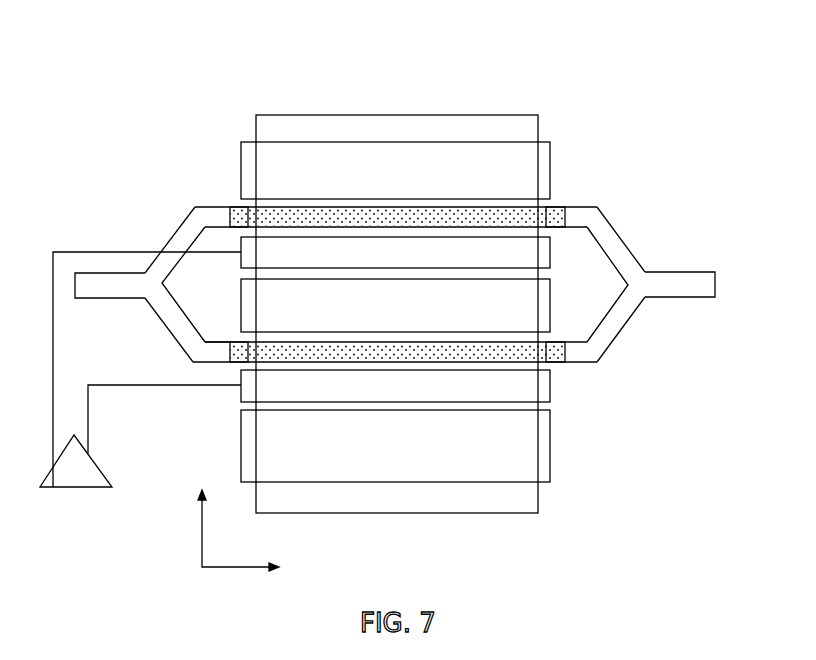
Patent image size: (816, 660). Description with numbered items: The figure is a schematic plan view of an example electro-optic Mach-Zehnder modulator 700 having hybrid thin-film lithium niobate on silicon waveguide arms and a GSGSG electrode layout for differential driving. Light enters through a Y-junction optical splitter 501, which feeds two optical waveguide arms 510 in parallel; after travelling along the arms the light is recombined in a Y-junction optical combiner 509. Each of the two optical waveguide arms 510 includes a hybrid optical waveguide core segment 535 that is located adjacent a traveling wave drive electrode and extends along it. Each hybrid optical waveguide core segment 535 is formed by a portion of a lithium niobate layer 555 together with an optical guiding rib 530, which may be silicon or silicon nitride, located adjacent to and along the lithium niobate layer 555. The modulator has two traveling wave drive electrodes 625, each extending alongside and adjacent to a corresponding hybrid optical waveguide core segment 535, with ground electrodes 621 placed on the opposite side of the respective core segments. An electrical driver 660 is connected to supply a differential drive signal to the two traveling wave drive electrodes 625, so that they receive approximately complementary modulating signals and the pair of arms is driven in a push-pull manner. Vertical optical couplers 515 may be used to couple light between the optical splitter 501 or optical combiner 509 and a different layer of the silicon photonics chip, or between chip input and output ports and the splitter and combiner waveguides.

The electro-optic MZM 700 is at (424, 33).
The lithium niobate layer 555 is at (337, 115).
The ground electrodes 621 is at (553, 155).
The optical splitter 501 is at (146, 266).
The optical waveguide arms 510 is at (228, 200).
The optical guiding rib 530 is at (525, 212).
The hybrid optical waveguide core segment 535 is at (351, 226).
The traveling wave drive electrodes 625 is at (240, 261).
The vertical optical couplers 515 is at (228, 351).
The optical combiner 509 is at (650, 247).
The electrical driver 660 is at (61, 492).